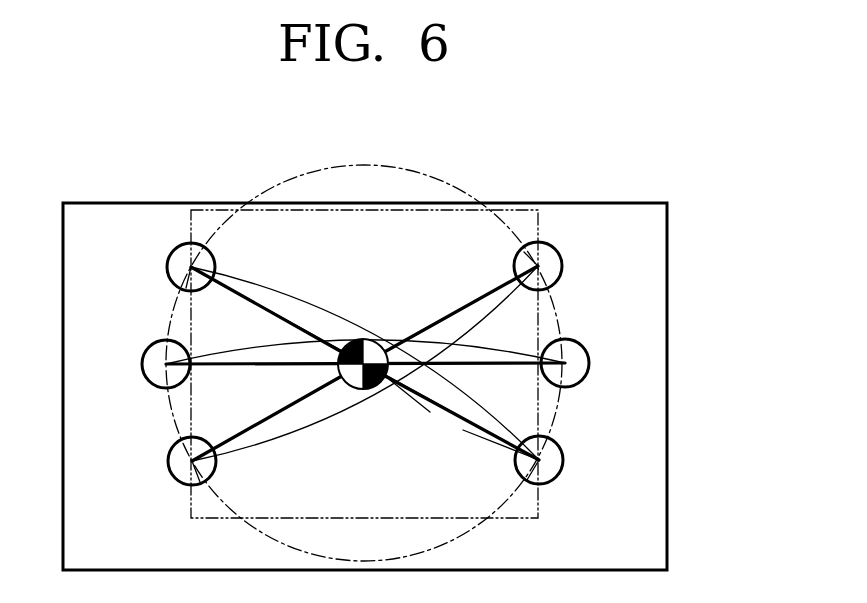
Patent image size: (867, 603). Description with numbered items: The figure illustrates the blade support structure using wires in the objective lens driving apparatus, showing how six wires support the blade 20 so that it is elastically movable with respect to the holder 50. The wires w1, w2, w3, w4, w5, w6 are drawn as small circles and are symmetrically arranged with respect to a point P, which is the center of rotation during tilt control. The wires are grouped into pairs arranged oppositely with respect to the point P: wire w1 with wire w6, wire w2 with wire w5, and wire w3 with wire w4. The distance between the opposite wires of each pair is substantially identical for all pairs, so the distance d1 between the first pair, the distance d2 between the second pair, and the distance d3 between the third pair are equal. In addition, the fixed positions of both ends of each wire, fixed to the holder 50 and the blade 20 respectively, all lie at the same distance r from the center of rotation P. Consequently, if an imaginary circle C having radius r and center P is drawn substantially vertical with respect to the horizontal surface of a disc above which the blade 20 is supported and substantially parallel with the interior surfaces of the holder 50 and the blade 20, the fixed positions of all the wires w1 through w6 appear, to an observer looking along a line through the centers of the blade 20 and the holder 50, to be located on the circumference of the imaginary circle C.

The blade 20 is at (271, 210).
The holder 50 is at (667, 400).
The center of rotation P is at (372, 338).
The imaginary circle C is at (458, 180).
The radius r is at (464, 420).
The distance between opposite wires d1 is at (365, 363).
The distance between opposite wires d2 is at (365, 349).
The distance between opposite wires d3 is at (365, 363).
The wire w1 is at (560, 263).
The wire w2 is at (586, 360).
The wire w3 is at (561, 458).
The wire w4 is at (168, 265).
The wire w5 is at (143, 362).
The wire w6 is at (169, 459).